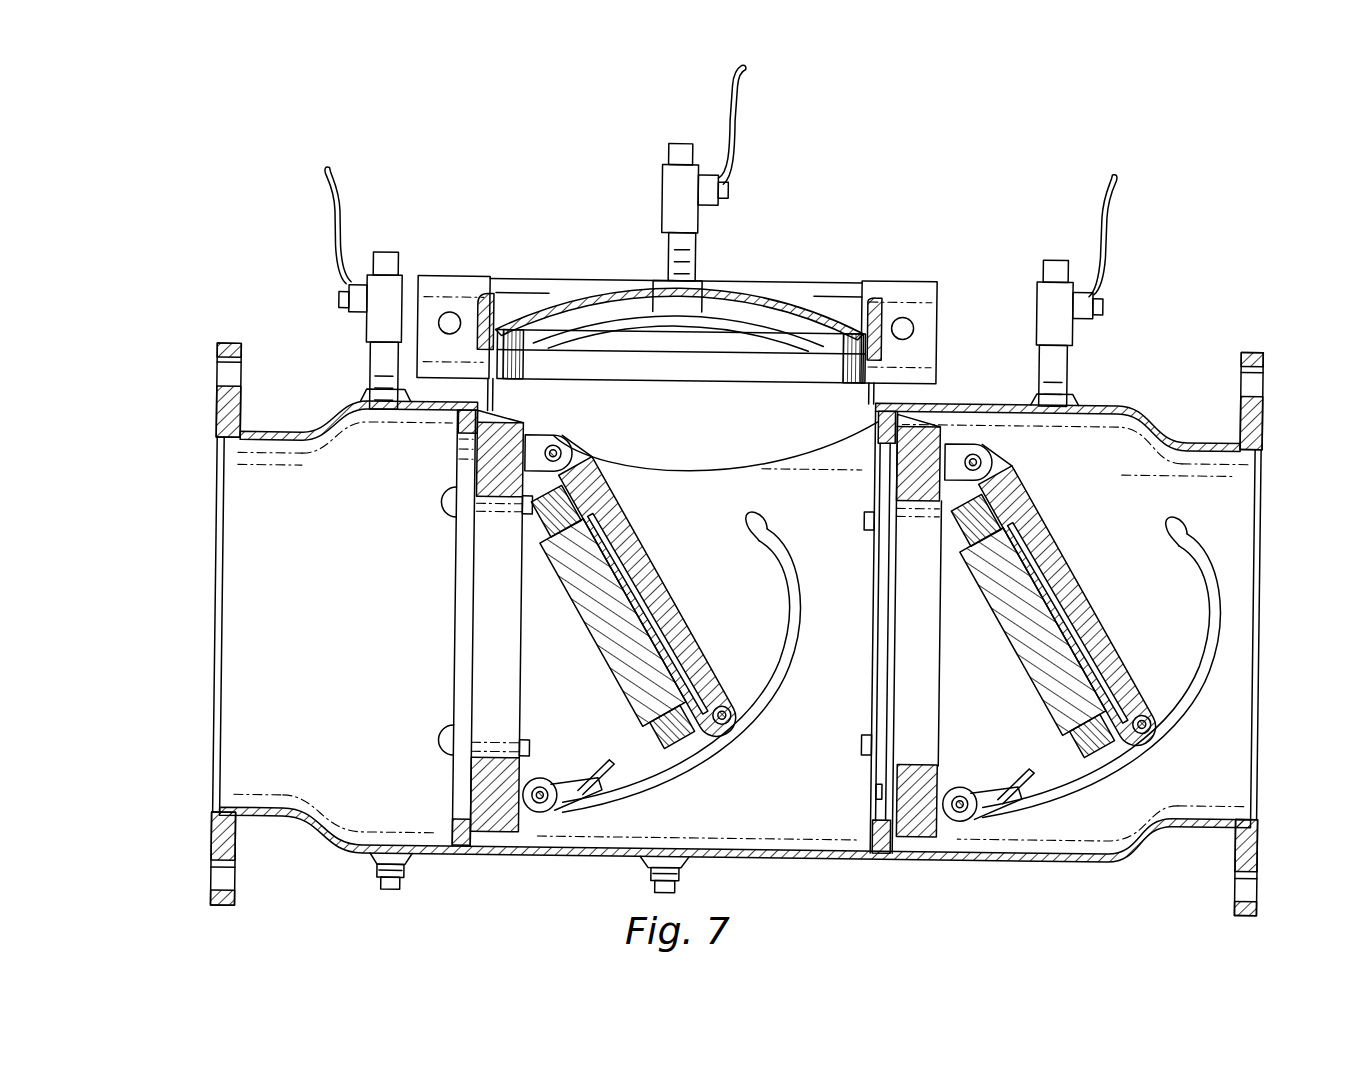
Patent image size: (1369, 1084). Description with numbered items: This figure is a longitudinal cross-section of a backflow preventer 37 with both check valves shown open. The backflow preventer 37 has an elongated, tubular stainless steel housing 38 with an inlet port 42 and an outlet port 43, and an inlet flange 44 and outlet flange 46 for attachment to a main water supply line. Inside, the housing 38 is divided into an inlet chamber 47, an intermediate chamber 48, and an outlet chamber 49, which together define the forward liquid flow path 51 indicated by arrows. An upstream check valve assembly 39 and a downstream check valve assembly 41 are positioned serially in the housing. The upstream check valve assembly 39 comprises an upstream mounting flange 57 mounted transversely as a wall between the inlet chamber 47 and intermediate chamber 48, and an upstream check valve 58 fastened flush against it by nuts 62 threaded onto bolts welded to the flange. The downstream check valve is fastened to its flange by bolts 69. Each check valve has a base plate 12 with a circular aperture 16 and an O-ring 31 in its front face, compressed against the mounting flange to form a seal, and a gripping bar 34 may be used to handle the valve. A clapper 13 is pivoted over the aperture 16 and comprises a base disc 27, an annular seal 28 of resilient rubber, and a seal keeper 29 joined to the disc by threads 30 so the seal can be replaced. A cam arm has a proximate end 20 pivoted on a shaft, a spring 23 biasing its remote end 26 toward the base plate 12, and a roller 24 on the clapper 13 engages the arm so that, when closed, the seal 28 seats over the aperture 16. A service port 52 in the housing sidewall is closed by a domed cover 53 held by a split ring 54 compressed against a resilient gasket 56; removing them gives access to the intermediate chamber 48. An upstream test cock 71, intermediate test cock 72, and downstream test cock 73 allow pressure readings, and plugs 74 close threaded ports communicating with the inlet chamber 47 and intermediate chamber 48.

The base plate 12 is at (512, 420).
The clapper 13 is at (662, 561).
The circular aperture 16 is at (470, 700).
The proximate end 20 is at (968, 810).
The spring 23 is at (596, 776).
The roller 24 is at (726, 705).
The remote end 26 is at (1186, 516).
The base disc 27 is at (680, 608).
The annular seal 28 is at (538, 516).
The seal keeper 29 is at (592, 640).
The threads 30 is at (580, 520).
The O-ring 31 is at (472, 838).
The gripping bar 34 is at (886, 648).
The backflow preventer 37 is at (728, 572).
The housing 38 is at (1102, 404).
The upstream check valve assembly 39 is at (637, 458).
The downstream check valve assembly 41 is at (1048, 496).
The inlet port 42 is at (213, 465).
The outlet port 43 is at (1262, 792).
The inlet flange 44 is at (213, 400).
The outlet flange 46 is at (1262, 432).
The inlet chamber 47 is at (272, 734).
The intermediate chamber 48 is at (806, 828).
The outlet chamber 49 is at (1104, 832).
The forward liquid flow path 51 is at (175, 622).
The service port 52 is at (522, 372).
The domed cover 53 is at (594, 290).
The split ring 54 is at (434, 279).
The gasket 56 is at (485, 305).
The upstream mounting flange 57 is at (462, 425).
The upstream check valve 58 is at (532, 432).
The nuts 62 is at (532, 752).
The bolts 69 is at (865, 516).
The upstream test cock 71 is at (362, 330).
The intermediate test cock 72 is at (703, 207).
The downstream test cock 73 is at (1033, 335).
The plugs 74 is at (410, 873).